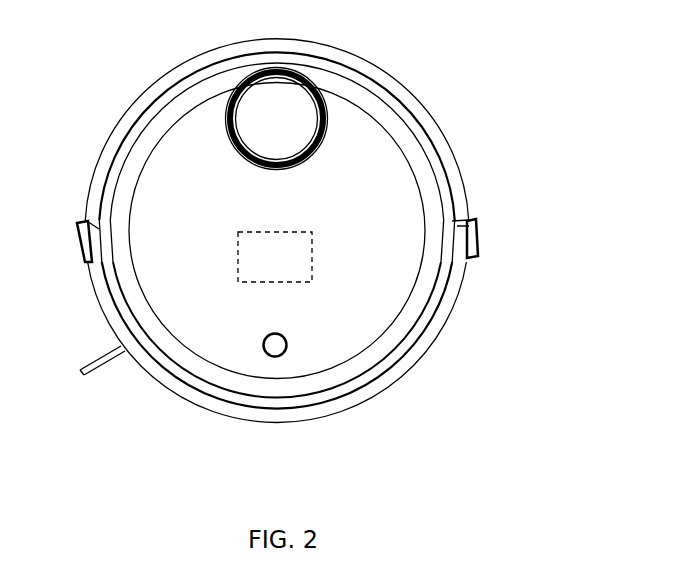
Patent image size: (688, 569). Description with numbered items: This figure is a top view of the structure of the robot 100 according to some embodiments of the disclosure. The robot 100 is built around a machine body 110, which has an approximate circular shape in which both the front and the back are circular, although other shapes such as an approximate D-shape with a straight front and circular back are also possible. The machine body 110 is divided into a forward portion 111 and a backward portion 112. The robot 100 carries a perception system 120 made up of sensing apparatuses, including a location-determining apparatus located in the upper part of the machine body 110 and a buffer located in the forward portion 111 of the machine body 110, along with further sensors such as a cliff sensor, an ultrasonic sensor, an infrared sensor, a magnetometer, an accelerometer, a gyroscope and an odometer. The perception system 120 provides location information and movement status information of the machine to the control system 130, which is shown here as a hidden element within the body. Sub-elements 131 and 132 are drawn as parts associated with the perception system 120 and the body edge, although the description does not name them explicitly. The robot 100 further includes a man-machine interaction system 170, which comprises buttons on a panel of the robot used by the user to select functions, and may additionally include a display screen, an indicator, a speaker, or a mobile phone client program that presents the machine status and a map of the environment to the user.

The robot 100 is at (413, 48).
The machine body 110 is at (398, 144).
The forward portion 111 is at (420, 331).
The backward portion 112 is at (330, 102).
The perception system 120 is at (333, 150).
The bumper 131 is at (313, 148).
The bumper side tab 132 is at (470, 262).
The control system 130 is at (310, 282).
The man-machine interaction system 170 is at (263, 343).